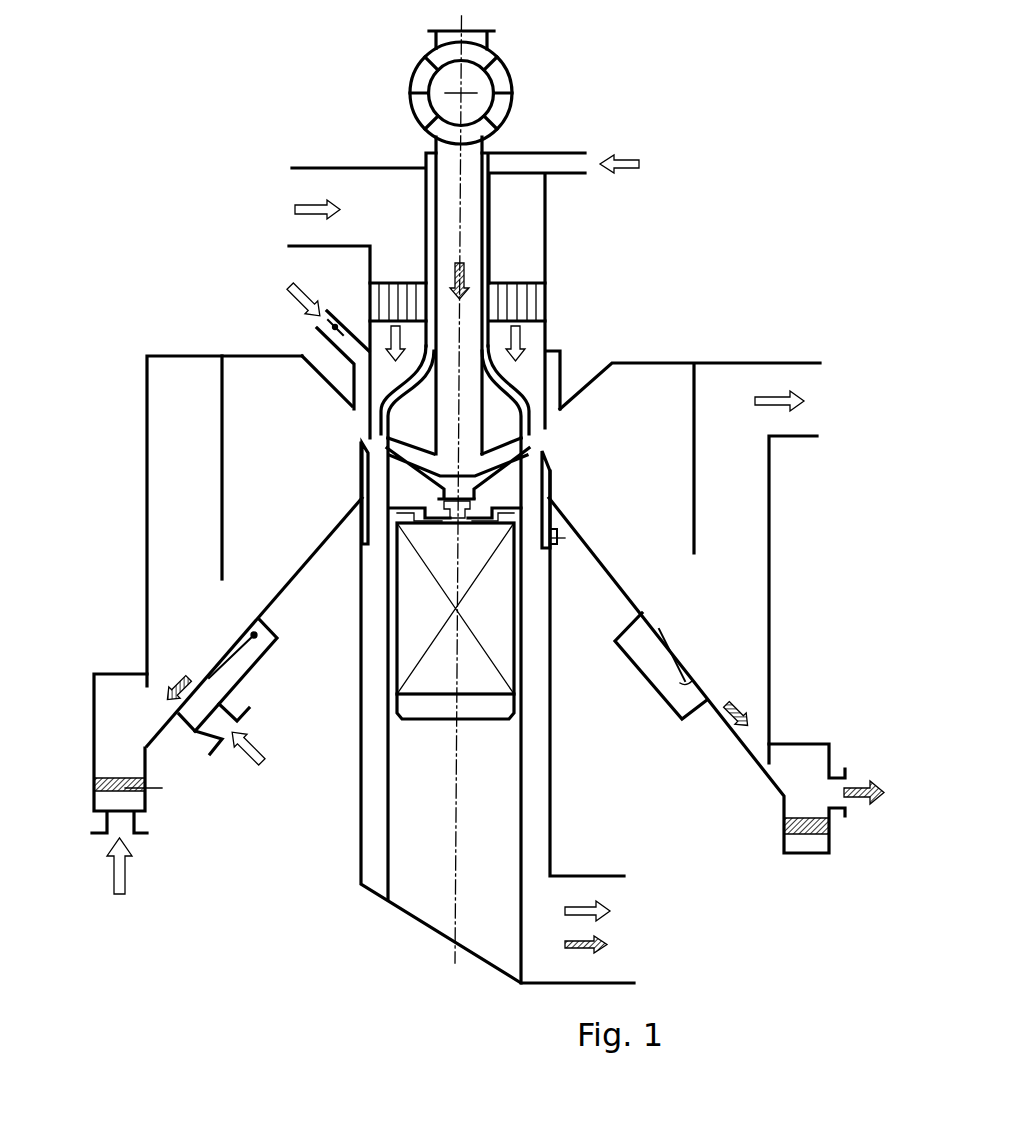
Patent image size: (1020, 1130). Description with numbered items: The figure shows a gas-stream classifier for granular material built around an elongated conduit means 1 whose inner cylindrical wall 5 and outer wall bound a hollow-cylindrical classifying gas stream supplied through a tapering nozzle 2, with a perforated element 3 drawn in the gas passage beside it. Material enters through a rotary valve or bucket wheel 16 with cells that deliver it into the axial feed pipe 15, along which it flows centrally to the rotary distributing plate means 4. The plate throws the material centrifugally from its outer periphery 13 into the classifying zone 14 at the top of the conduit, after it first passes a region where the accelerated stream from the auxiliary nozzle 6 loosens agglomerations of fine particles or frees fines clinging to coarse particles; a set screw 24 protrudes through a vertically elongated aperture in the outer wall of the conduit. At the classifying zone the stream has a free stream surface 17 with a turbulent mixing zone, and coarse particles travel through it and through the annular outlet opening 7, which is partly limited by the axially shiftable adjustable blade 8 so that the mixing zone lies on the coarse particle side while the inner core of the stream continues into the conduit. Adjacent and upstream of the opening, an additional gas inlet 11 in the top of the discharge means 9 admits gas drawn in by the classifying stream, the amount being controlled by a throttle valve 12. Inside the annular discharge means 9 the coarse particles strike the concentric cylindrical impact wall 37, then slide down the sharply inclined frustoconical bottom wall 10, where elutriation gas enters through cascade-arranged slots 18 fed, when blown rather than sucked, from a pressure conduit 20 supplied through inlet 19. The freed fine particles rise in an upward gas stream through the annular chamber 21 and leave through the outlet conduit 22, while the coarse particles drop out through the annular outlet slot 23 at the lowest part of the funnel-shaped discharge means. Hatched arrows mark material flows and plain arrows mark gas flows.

The conduit means 1 is at (532, 663).
The nozzle 2 is at (526, 383).
The grate 3 is at (502, 305).
The distributing plate means 4 is at (452, 482).
The inner cylindrical wall 5 is at (520, 735).
The auxiliary nozzle 6 is at (486, 208).
The annular outlet opening 7 is at (367, 437).
The adjustable blade 8 is at (357, 522).
The discharge means 9 is at (580, 415).
The frustoconical bottom wall 10 is at (273, 600).
The additional gas inlet 11 is at (360, 393).
The throttle valve 12 is at (333, 323).
The outer periphery 13 is at (510, 467).
The classifying zone 14 is at (520, 443).
The axial feed pipe 15 is at (453, 158).
The rotary valve 16 is at (493, 82).
The free stream surface 17 is at (543, 448).
The slots 18 is at (215, 670).
The inlet 19 is at (243, 712).
The conduit 20 is at (250, 648).
The annular chamber 21 is at (175, 495).
The outlet conduit 22 is at (733, 398).
The annular outlet slot 23 is at (760, 767).
The set screw 24 is at (558, 543).
The cylindrical wall 37 is at (222, 453).